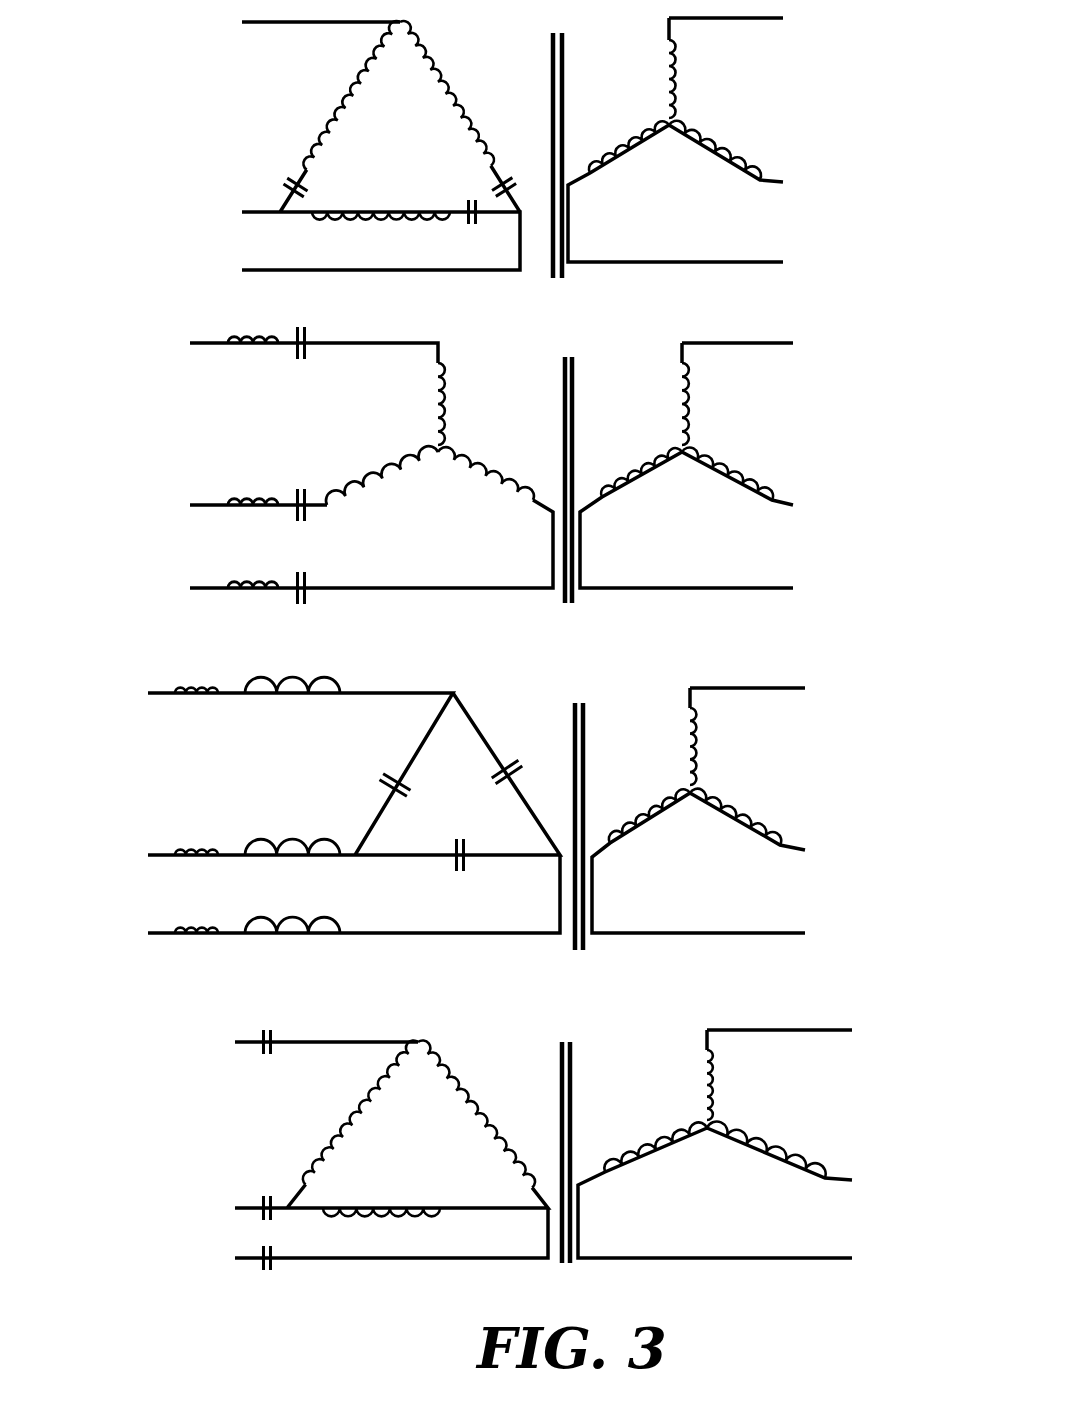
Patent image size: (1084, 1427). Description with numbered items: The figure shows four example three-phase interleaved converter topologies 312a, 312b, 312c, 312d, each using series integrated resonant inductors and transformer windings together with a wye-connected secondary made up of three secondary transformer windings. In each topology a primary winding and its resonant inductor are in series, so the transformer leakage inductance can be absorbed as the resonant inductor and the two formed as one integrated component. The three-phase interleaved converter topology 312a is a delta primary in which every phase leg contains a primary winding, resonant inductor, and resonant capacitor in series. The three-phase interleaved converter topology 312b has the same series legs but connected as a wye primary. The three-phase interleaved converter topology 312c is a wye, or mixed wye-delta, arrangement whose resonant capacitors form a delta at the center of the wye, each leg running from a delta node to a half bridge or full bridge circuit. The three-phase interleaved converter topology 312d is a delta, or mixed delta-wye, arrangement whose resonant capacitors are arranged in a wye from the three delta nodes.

The three-phase interleaved converter topology 312a is at (186, 74).
The three-phase interleaved converter topology 312b is at (147, 396).
The three-phase interleaved converter topology 312c is at (129, 738).
The three-phase interleaved converter topology 312d is at (160, 1078).